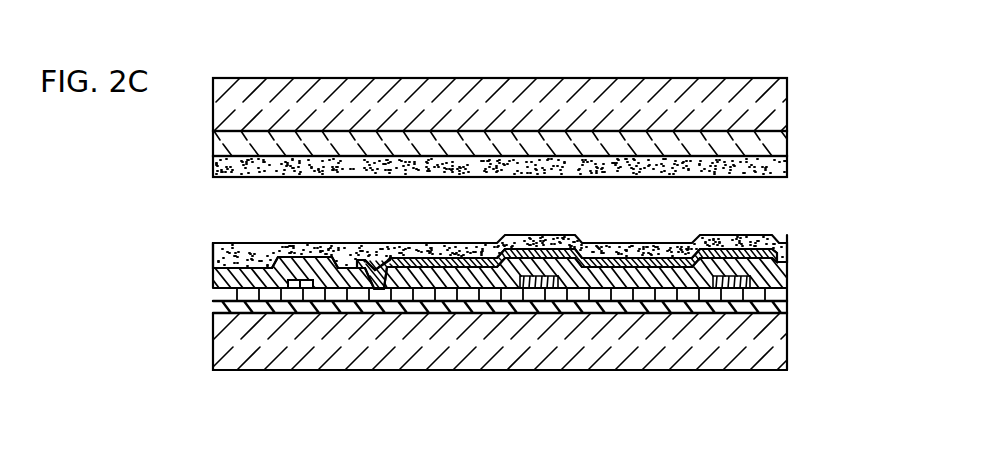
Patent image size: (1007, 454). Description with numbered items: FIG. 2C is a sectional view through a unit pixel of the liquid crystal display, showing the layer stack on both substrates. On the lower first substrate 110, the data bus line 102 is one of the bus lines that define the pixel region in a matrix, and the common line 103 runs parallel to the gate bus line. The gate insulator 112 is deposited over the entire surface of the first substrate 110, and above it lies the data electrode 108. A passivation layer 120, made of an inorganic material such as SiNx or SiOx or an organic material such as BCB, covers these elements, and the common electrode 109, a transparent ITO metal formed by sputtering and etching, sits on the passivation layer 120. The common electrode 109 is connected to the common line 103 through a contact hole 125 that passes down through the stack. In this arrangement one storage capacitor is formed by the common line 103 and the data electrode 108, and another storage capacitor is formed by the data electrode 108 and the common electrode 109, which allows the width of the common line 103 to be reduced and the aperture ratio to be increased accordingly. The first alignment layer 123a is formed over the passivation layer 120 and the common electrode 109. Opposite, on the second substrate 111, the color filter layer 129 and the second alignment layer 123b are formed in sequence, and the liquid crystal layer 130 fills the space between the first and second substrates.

The data bus line 102 is at (310, 281).
The common line 103 is at (693, 310).
The data electrode 108 is at (552, 288).
The common electrode 109 is at (772, 257).
The first substrate 110 is at (747, 348).
The second substrate 111 is at (755, 90).
The gate insulator 112 is at (778, 293).
The passivation layer 120 is at (780, 272).
The first alignment layer 123a is at (230, 263).
The second alignment layer 123b is at (778, 173).
The contact hole 125 is at (398, 226).
The color filter layer 129 is at (772, 145).
The liquid crystal layer 130 is at (293, 208).